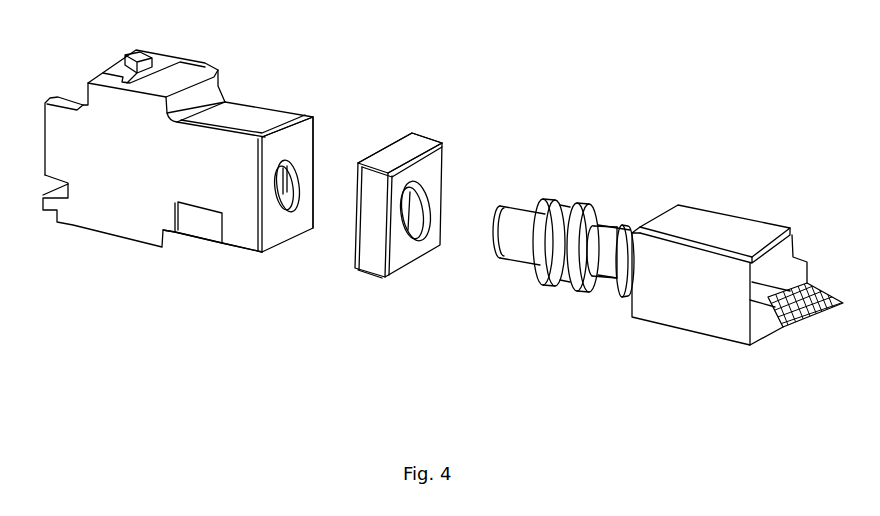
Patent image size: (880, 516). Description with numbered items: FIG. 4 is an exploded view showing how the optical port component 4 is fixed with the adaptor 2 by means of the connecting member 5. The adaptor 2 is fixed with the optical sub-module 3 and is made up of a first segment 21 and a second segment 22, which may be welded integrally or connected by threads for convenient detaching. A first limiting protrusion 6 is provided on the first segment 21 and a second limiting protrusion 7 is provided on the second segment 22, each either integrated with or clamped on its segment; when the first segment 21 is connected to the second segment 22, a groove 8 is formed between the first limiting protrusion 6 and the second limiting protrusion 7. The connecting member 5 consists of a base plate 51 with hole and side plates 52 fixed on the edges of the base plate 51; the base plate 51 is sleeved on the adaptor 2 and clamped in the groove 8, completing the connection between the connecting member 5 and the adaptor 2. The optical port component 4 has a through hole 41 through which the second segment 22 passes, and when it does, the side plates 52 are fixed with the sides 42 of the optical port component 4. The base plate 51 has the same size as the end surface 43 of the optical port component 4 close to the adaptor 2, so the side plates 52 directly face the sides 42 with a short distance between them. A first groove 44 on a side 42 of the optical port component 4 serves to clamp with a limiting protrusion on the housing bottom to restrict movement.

The adaptor 2 is at (571, 248).
The optical sub-module 3 is at (718, 237).
The optical port component 4 is at (110, 207).
The connecting member 5 is at (450, 145).
The first limiting protrusion 6 is at (605, 203).
The second limiting protrusion 7 is at (560, 198).
The groove 8 is at (580, 200).
The first segment 21 is at (607, 265).
The second segment 22 is at (523, 242).
The through hole for the optical port component 41 is at (283, 200).
The sides of the optical port component 42 is at (247, 218).
The end surface 43 is at (302, 147).
The first groove 44 is at (205, 222).
The base plate with hole 51 is at (433, 170).
The side plates 52 is at (413, 143).